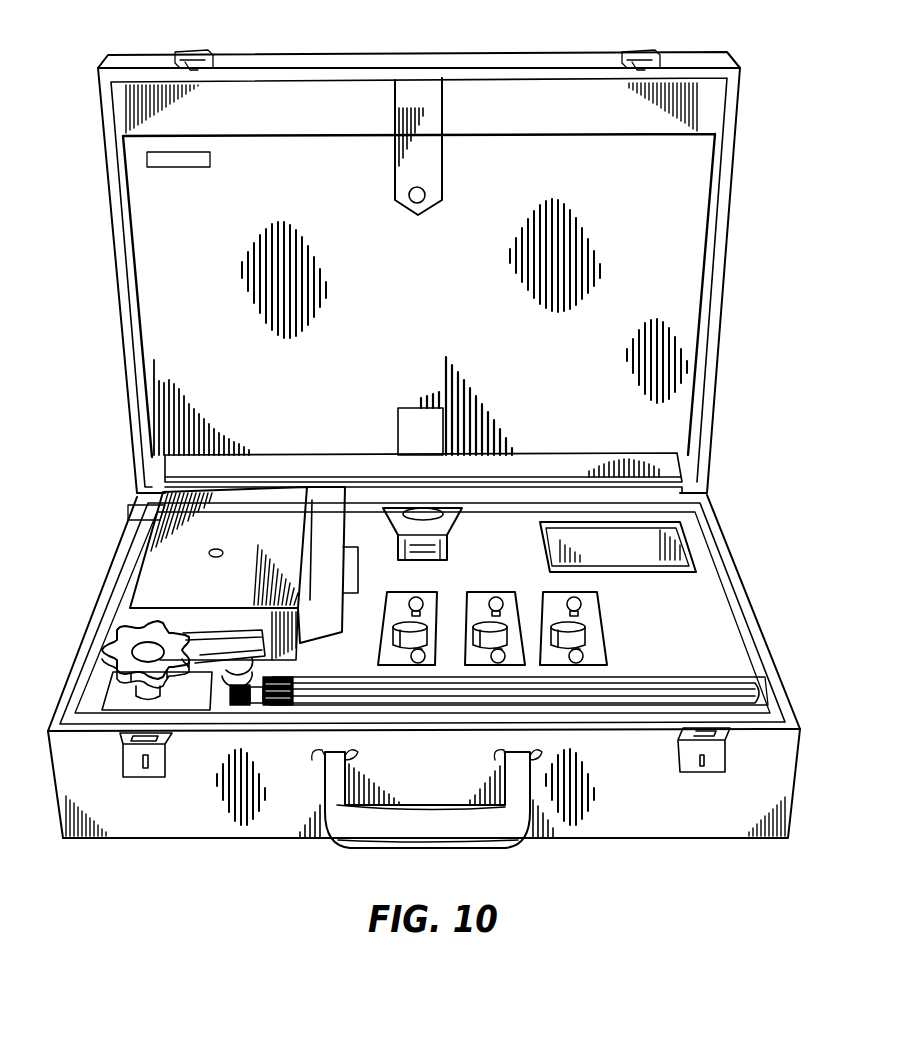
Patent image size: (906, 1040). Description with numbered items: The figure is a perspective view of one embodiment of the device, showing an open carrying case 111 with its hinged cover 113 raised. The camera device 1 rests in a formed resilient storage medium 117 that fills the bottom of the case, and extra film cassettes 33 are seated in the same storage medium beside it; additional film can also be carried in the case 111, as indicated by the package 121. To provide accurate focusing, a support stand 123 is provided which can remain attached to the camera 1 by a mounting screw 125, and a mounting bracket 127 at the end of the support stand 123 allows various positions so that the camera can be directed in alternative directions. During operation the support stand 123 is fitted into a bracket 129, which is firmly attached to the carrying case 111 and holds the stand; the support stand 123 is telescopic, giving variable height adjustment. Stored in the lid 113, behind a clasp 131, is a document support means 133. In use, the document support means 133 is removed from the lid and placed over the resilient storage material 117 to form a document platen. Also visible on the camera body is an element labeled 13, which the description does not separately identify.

The camera device 1 is at (158, 566).
The clamp plate 13 is at (352, 547).
The extra film cassettes 33 is at (540, 606).
The carrying case 111 is at (743, 338).
The hinged cover 113 is at (346, 25).
The formed resilient storage medium 117 is at (728, 632).
The package 121 is at (673, 548).
The support stand 123 is at (642, 702).
The mounting screw 125 is at (254, 634).
The mounting bracket 127 is at (115, 700).
The bracket 129 is at (450, 510).
The clasp 131 is at (442, 180).
The document support means 133 is at (158, 347).